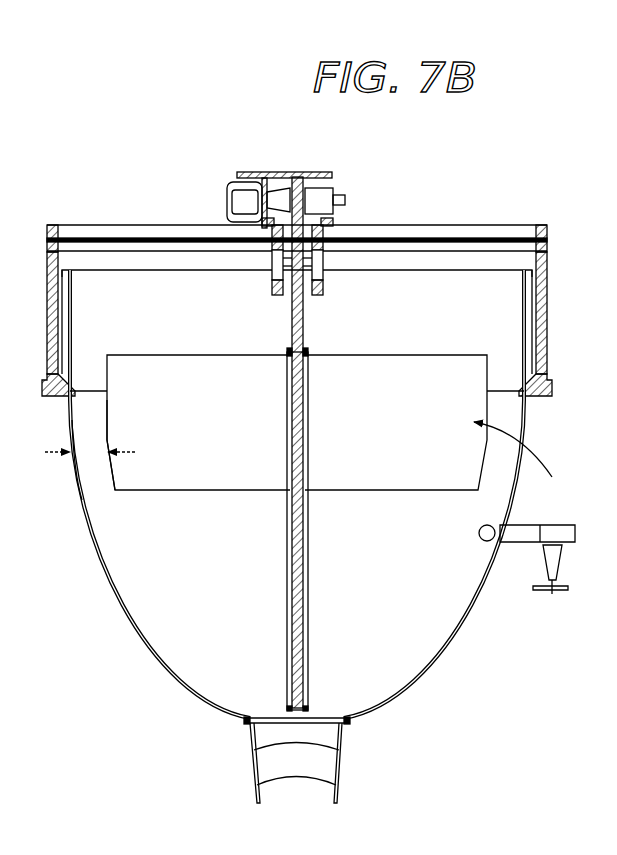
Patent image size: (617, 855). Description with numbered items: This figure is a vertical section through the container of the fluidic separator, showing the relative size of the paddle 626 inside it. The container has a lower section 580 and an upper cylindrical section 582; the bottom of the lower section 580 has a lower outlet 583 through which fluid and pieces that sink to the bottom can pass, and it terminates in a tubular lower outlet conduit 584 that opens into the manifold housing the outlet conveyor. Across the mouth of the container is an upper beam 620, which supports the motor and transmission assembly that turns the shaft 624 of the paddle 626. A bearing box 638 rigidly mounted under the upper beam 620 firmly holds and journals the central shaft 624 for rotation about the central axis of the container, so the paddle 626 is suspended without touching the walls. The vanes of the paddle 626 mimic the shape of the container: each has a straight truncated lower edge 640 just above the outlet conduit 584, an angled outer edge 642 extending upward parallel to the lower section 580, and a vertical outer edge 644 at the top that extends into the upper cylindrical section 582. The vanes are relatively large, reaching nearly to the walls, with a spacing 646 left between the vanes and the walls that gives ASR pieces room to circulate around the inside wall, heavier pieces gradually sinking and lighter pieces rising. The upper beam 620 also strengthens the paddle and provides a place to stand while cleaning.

The upper beam 620 is at (458, 224).
The upper cylindrical section 582 is at (527, 328).
The bearing box 638 is at (275, 283).
The shaft 624 is at (303, 322).
The vertical outer edge 644 is at (70, 405).
The spacing 646 is at (92, 452).
The angled outer edge 642 is at (112, 474).
The straight truncated lower edge 640 is at (235, 495).
The paddle 626 is at (529, 463).
The lower section 580 is at (478, 608).
The lower outlet 583 is at (313, 720).
The lower outlet conduit 584 is at (343, 765).